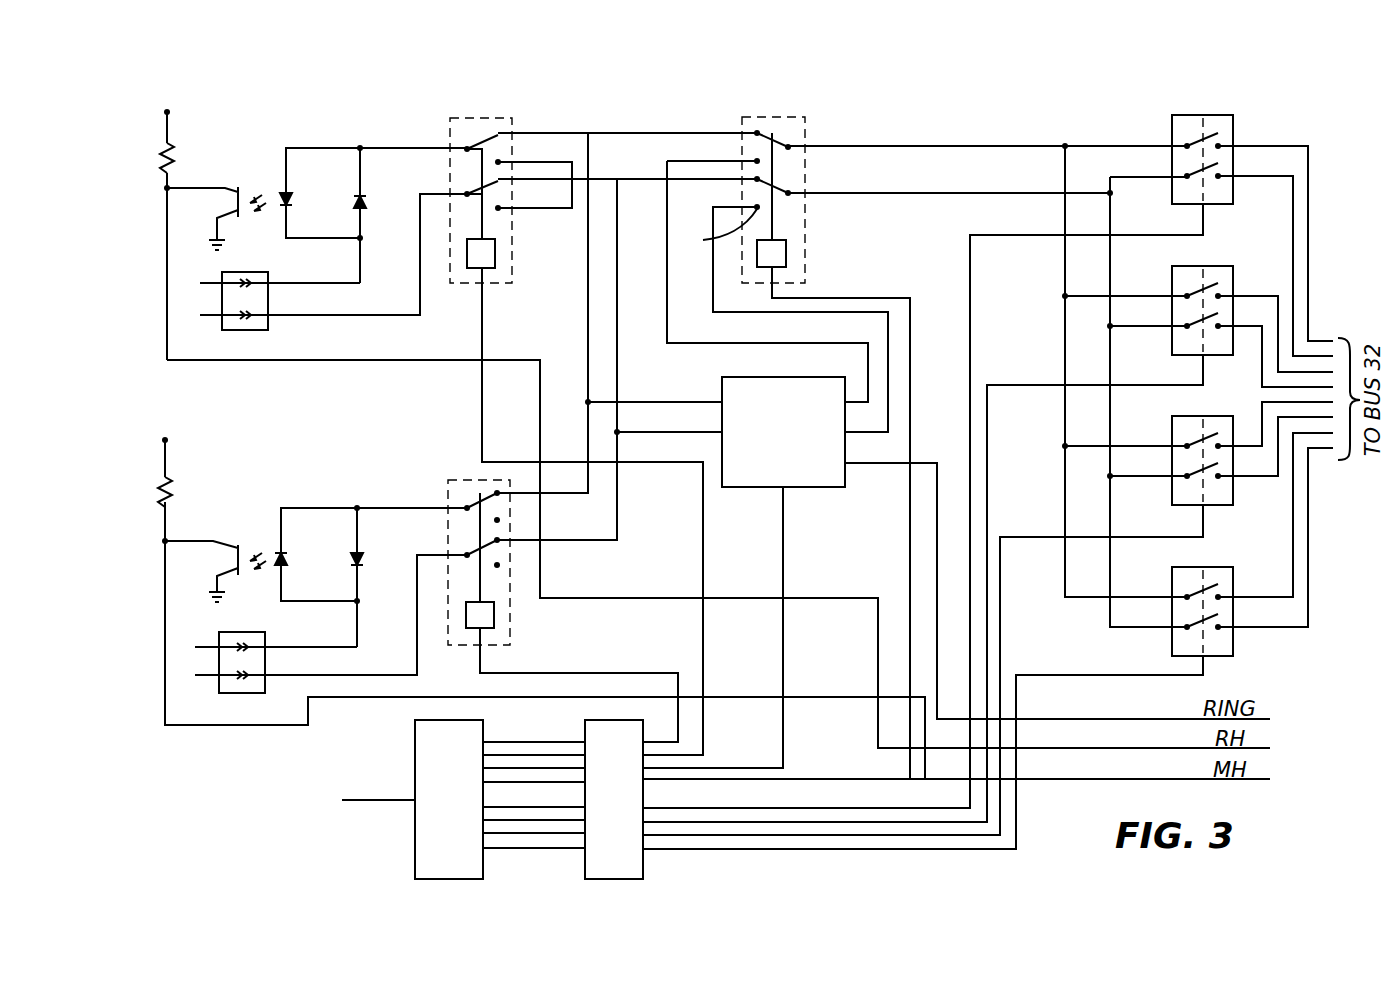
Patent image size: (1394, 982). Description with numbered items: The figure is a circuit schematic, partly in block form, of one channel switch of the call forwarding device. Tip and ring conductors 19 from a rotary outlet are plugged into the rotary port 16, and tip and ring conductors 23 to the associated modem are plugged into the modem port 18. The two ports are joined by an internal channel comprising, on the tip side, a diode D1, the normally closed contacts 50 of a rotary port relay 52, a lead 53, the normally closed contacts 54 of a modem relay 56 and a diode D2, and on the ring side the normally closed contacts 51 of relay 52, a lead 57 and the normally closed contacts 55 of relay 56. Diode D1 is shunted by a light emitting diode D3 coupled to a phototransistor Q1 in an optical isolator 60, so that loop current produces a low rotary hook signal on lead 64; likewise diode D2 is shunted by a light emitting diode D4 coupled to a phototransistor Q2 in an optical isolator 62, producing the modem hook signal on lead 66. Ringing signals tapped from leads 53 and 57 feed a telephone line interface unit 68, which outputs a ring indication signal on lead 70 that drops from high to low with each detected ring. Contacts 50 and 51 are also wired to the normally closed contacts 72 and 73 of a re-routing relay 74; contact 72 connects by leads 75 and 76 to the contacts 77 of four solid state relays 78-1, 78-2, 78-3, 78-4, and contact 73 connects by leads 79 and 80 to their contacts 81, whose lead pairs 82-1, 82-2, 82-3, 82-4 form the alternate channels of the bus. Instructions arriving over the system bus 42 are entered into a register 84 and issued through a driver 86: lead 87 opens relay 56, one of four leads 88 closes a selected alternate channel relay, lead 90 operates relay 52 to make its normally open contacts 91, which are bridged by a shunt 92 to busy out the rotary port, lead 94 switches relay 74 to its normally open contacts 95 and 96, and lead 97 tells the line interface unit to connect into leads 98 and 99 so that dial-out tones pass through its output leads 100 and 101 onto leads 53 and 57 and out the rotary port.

The rotary port 16 is at (268, 324).
The modem port 18 is at (265, 642).
The tip and ring conductors 19 is at (213, 316).
The tip and ring conductors 23 is at (205, 680).
The system bus 42 is at (373, 802).
The normally closed contacts 50 is at (503, 131).
The normally closed contacts 51 is at (467, 185).
The rotary port relay 52 is at (513, 252).
The lead 53 is at (588, 288).
The normally closed contacts 54 is at (495, 490).
The normally closed contacts 55 is at (476, 547).
The modem relay 56 is at (510, 612).
The lead 57 is at (618, 256).
The optical isolator 60 is at (257, 175).
The optical isolator 62 is at (262, 530).
The lead 64 is at (668, 598).
The lead 66 is at (806, 697).
The telephone line interface unit 68 is at (783, 432).
The lead 70 is at (930, 460).
The normally closed contact 72 is at (790, 137).
The normally closed contact 73 is at (755, 181).
The re-routing mechanical relay 74 is at (805, 226).
The lead 75 is at (912, 147).
The lead 76 is at (1063, 272).
The contacts 77 is at (1192, 138).
The solid state relay 78-1 is at (1225, 205).
The solid state relay 78-2 is at (1220, 356).
The solid state relay 78-3 is at (1220, 506).
The solid state relay 78-4 is at (1230, 657).
The lead 79 is at (912, 193).
The lead 80 is at (1110, 366).
The contacts 81 is at (1186, 170).
The lead pair 82-1 is at (1245, 175).
The lead pair 82-2 is at (1245, 330).
The lead pair 82-3 is at (1250, 450).
The lead pair 82-4 is at (1250, 605).
The register 84 is at (415, 752).
The driver 86 is at (586, 745).
The lead 87 is at (610, 673).
The leads 88 is at (777, 808).
The lead 90 is at (637, 463).
The normally open contacts 91 is at (500, 162).
The shunt 92 is at (573, 172).
The lead 94 is at (834, 779).
The normally open contact 95 is at (755, 160).
The normally open contact 96 is at (720, 228).
The lead 97 is at (783, 513).
The lead 98 is at (698, 346).
The lead 99 is at (791, 316).
The output lead 100 is at (686, 400).
The output lead 101 is at (686, 430).
The diode D1 is at (363, 204).
The diode D2 is at (363, 566).
The light emitting diode D3 is at (320, 193).
The light emitting diode D4 is at (286, 564).
The phototransistor Q1 is at (256, 229).
The phototransistor Q2 is at (256, 601).